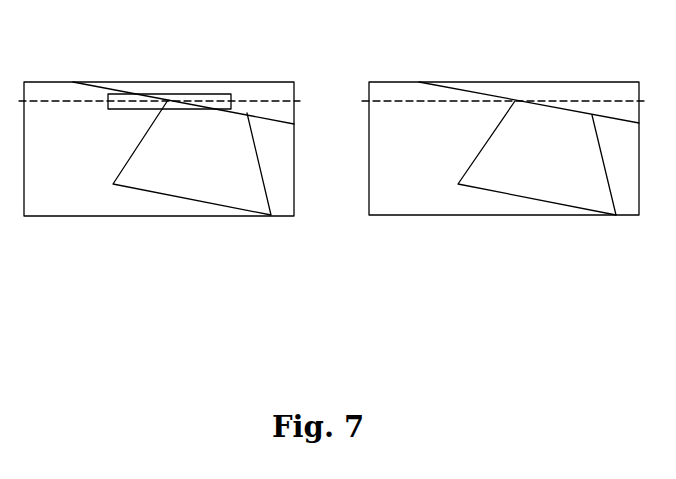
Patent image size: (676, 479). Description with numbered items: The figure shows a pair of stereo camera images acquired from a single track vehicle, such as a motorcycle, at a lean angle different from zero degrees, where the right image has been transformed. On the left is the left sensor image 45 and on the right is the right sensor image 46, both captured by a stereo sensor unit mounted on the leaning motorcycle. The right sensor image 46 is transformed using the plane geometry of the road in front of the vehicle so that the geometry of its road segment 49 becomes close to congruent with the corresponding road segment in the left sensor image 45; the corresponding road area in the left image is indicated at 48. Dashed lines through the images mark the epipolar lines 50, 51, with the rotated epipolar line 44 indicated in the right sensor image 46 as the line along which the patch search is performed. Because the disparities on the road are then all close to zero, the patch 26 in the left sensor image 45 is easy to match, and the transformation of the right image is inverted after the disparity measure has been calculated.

The left sensor image 45 is at (55, 82).
The center line of first region 50 is at (267, 101).
The patch 26 is at (166, 101).
The first rotated viewport 48 is at (254, 205).
The right sensor image 46 is at (395, 82).
The center line of second region 51 is at (617, 101).
The rotated epipolar line 44 is at (541, 101).
The road segment 49 is at (603, 205).